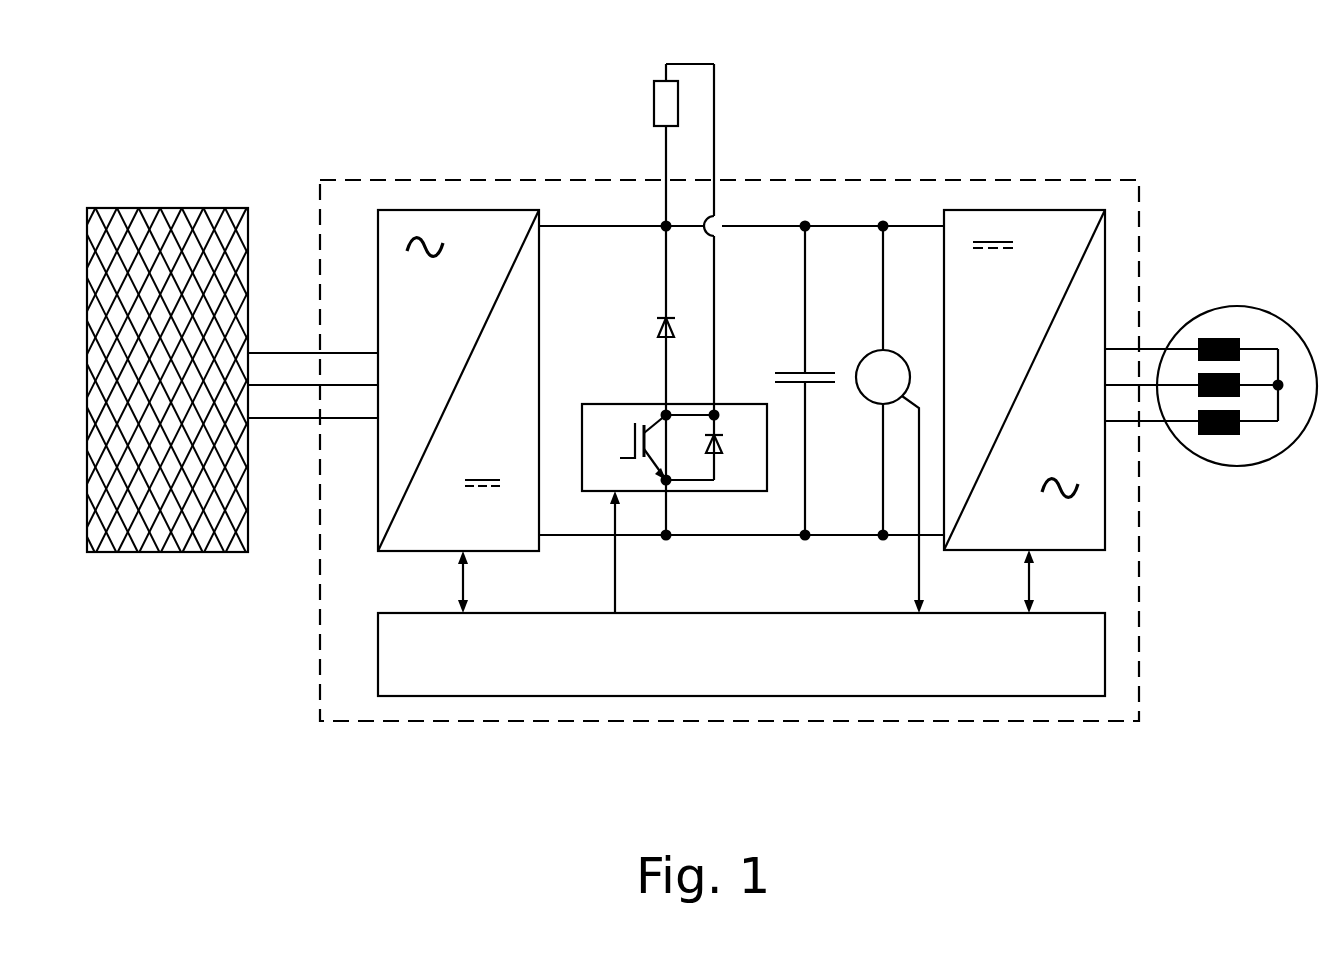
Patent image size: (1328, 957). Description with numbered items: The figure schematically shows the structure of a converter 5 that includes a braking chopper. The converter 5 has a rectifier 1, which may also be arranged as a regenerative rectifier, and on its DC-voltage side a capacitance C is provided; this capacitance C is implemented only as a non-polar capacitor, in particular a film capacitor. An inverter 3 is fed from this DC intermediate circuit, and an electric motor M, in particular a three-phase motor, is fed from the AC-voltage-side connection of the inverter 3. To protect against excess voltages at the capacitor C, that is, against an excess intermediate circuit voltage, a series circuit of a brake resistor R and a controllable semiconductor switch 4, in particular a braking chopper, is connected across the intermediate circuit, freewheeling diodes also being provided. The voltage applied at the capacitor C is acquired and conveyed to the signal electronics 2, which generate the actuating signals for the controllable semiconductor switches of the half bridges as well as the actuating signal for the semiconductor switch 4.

The rectifier 1 is at (473, 235).
The signal electronics 2 is at (753, 672).
The inverter 3 is at (1052, 235).
The controllable semiconductor switch 4 is at (606, 439).
The converter 5 is at (1032, 724).
The brake resistor R is at (671, 239).
The capacitance C is at (802, 380).
The electric motor M is at (1215, 368).